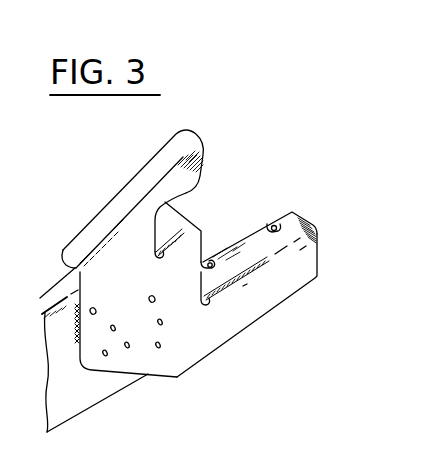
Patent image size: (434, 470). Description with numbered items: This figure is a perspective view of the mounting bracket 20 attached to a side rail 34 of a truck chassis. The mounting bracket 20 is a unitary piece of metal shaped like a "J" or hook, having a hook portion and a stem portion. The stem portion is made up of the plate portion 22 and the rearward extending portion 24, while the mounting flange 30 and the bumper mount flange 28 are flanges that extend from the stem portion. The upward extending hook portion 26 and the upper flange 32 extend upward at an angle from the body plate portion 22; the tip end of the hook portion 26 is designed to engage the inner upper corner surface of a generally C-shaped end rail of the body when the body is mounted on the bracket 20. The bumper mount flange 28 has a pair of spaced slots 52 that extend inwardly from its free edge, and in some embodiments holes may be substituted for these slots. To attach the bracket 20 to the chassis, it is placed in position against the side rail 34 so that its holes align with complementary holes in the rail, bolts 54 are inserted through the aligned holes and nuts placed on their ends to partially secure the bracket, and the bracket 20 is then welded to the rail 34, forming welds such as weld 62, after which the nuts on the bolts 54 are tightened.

The mounting bracket 20 is at (84, 197).
The plate portion 22 is at (139, 328).
The rearward extending portion 24 is at (268, 287).
The upward extending hook portion 26 is at (198, 187).
The bumper mount flange 28 is at (297, 223).
The mounting flange 30 is at (176, 221).
The upper flange 32 is at (151, 181).
The side rail 34 is at (98, 387).
The slots 52 is at (211, 262).
The bolts 54 is at (151, 295).
The weld 62 is at (75, 338).